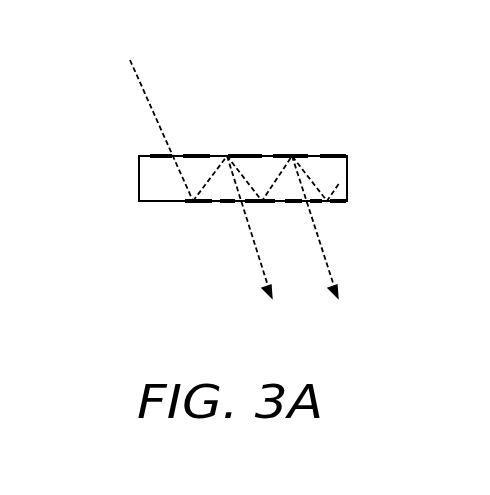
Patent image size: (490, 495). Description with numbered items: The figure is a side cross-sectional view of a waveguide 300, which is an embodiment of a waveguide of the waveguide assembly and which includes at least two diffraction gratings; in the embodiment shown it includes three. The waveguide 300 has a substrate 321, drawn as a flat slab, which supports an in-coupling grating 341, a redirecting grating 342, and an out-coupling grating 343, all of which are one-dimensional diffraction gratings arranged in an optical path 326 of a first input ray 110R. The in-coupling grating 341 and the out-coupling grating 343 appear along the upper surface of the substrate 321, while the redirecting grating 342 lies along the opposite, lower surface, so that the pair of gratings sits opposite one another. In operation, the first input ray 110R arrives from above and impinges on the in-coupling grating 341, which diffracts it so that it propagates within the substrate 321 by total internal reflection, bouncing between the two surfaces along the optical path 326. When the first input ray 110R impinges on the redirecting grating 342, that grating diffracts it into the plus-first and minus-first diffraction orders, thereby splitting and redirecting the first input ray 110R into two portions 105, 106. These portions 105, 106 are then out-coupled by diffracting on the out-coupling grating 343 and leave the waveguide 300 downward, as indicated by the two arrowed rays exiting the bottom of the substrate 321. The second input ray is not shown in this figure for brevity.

The waveguide 300 is at (372, 177).
The substrate 321 is at (138, 178).
The optical path 326 is at (216, 161).
The in-coupling grating 341 is at (170, 155).
The out-coupling grating 343 is at (258, 155).
The redirecting grating 342 is at (225, 203).
The first input ray 110R is at (131, 124).
The portion of the first input ray 105 is at (248, 235).
The portion of the first input ray 106 is at (315, 235).